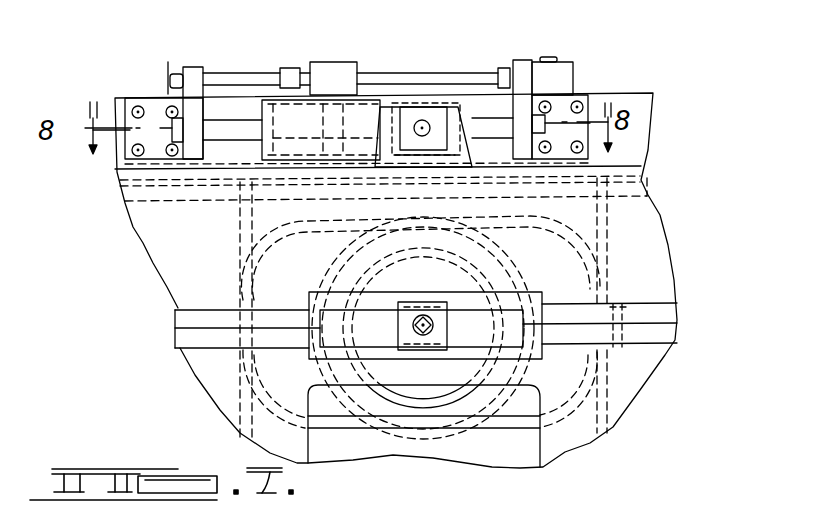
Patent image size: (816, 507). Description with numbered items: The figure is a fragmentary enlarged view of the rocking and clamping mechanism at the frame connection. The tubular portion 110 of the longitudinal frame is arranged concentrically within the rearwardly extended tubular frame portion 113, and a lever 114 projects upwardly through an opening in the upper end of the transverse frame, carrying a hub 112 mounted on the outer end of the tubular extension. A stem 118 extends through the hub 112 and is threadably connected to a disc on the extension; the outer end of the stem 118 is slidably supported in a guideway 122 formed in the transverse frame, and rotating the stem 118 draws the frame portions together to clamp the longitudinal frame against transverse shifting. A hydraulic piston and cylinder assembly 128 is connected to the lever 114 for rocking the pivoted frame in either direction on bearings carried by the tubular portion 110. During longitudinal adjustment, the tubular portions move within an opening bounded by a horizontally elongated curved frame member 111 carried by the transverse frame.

The hydraulic piston and cylinder assembly 128 is at (379, 60).
The lever 114 is at (516, 214).
The rearwardly extended tubular frame portion 113 is at (335, 264).
The tubular portion 110 is at (400, 404).
The hub 112 is at (441, 398).
The guideway 122 is at (555, 276).
The stem 118 is at (424, 313).
The horizontally elongated curved frame member 111 is at (507, 420).